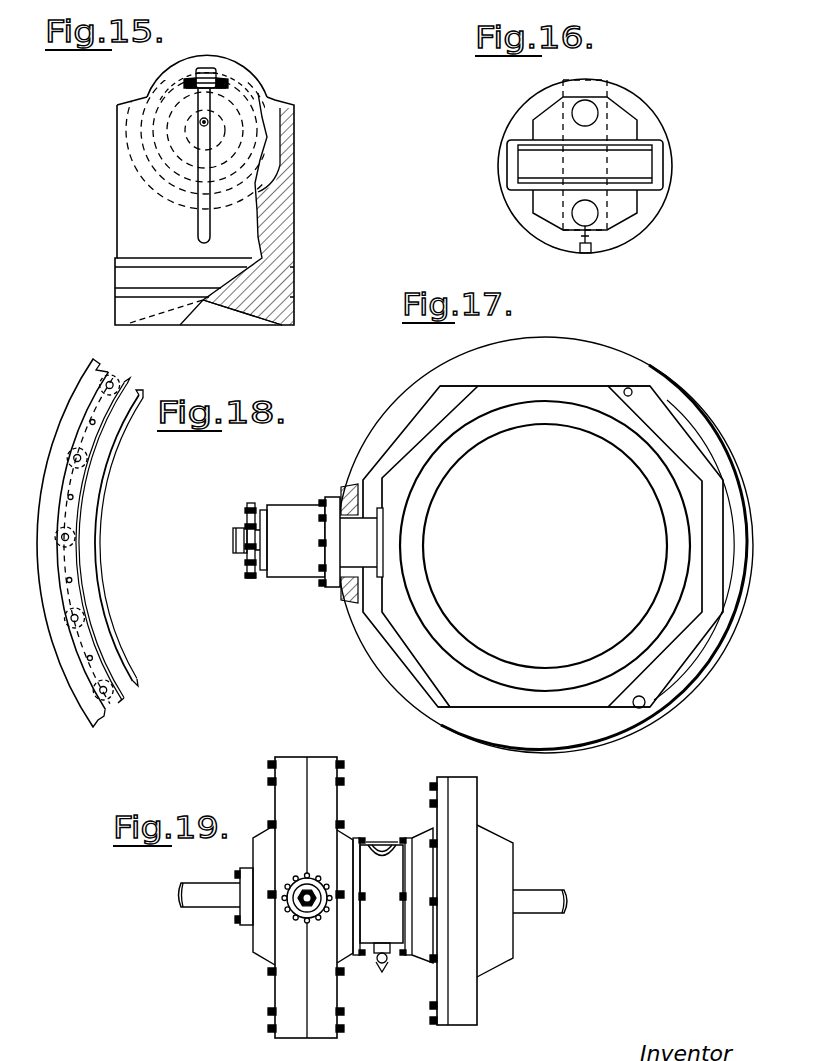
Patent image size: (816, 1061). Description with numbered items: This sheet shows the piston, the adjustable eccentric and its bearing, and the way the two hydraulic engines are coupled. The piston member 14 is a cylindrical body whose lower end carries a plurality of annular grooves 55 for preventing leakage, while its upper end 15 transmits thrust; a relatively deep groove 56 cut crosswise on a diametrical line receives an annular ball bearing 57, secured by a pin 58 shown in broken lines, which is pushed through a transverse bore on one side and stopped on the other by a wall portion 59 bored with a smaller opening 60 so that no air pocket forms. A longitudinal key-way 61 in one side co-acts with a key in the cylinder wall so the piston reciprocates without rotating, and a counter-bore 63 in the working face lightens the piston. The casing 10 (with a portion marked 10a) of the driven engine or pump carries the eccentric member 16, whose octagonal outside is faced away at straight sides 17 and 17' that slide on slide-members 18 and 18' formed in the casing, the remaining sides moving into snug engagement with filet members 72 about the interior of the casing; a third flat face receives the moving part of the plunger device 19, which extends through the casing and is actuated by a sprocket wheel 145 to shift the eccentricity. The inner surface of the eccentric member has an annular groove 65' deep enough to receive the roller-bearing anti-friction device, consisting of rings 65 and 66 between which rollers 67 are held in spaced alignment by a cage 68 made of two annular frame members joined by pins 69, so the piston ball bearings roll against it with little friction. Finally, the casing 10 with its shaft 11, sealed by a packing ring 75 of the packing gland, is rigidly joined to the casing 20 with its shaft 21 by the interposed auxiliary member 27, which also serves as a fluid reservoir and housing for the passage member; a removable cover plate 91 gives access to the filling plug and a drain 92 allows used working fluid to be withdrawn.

In FIG. 15, the piston member 14 is at (330, 210).
In FIG. 15, the outer end of piston 15 is at (295, 108).
In FIG. 15, the annular grooves 55 is at (292, 297).
In FIG. 15, the groove 56 is at (280, 120).
In FIG. 16, the groove 56 is at (657, 182).
In FIG. 15, the annular ball bearing 57 is at (233, 72).
In FIG. 16, the annular ball bearing 57 is at (630, 165).
In FIG. 15, the pin 58 is at (117, 135).
In FIG. 16, the pin 58 is at (600, 79).
In FIG. 15, the wall portion 59 is at (200, 110).
In FIG. 15, the smaller opening 60 is at (201, 123).
In FIG. 15, the longitudinal groove or key-way 61 is at (199, 225).
In FIG. 16, the longitudinal groove or key-way 61 is at (585, 254).
In FIG. 15, the counter-bore 63 is at (230, 310).
In FIG. 17, the casing 10 is at (716, 385).
In FIG. 19, the casing 10 is at (294, 757).
In FIG. 17, the housing rim 10a is at (658, 374).
In FIG. 17, the eccentric member 16 is at (426, 467).
In FIG. 17, the straight side 17 is at (545, 347).
In FIG. 17, the straight side 17' is at (544, 743).
In FIG. 17, the slide-member 18 is at (647, 356).
In FIG. 17, the slide-member 18' is at (667, 726).
In FIG. 17, the plunger device 19 is at (345, 585).
In FIG. 17, the filet members 72 is at (689, 438).
In FIG. 18, the ring 65 is at (69, 543).
In FIG. 17, the annular groove 65' is at (540, 546).
In FIG. 18, the ring 66 is at (118, 430).
In FIG. 18, the rollers 67 is at (87, 462).
In FIG. 18, the cage 68 is at (68, 562).
In FIG. 18, the pins 69 is at (92, 658).
In FIG. 17, the sprocket wheel 145 is at (248, 510).
In FIG. 19, the sprocket wheel 145 is at (297, 917).
In FIG. 19, the packing ring 75 is at (238, 877).
In FIG. 19, the shaft 11 is at (212, 900).
In FIG. 19, the auxiliary member 27 is at (372, 934).
In FIG. 19, the removable cover plate 91 is at (385, 844).
In FIG. 19, the drain 92 is at (389, 959).
In FIG. 19, the casing 20 is at (482, 807).
In FIG. 19, the shaft 21 is at (543, 892).